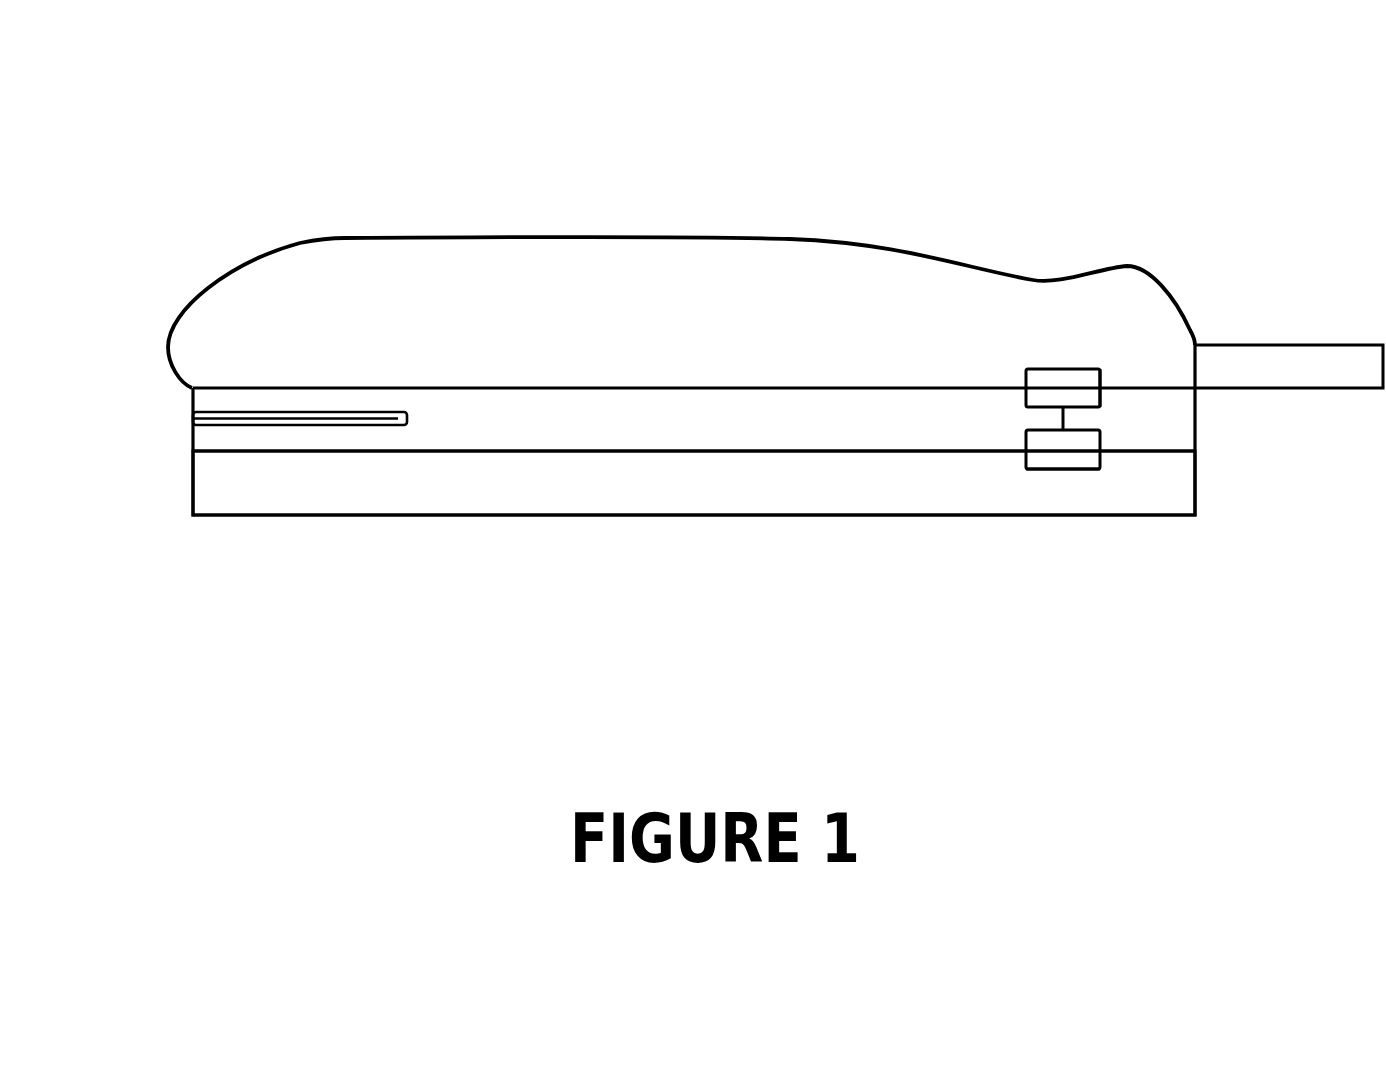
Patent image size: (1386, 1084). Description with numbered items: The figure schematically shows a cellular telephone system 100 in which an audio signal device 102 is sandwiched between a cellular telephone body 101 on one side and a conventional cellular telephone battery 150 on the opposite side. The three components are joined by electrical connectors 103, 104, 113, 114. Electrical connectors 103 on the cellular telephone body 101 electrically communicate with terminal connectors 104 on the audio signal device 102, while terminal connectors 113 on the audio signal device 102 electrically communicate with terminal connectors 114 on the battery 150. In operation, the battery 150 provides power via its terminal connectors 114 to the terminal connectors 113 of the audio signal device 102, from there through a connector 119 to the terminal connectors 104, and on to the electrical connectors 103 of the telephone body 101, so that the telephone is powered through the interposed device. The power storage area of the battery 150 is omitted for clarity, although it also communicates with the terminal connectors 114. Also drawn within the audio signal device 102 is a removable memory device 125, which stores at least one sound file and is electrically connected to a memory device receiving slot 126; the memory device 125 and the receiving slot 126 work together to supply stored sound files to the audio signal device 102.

The cellular telephone system 100 is at (190, 192).
The cellular telephone body 101 is at (387, 235).
The audio signal device 102 is at (462, 451).
The electrical connectors 103 is at (1063, 368).
The electrical connectors 104 is at (1100, 400).
The electrical connectors 113 is at (1026, 442).
The electrical connectors 114 is at (1075, 469).
The connector 119 is at (1067, 418).
The removable memory device 125 is at (263, 425).
The memory device receiving slot 126 is at (344, 425).
The cellular telephone battery 150 is at (737, 515).